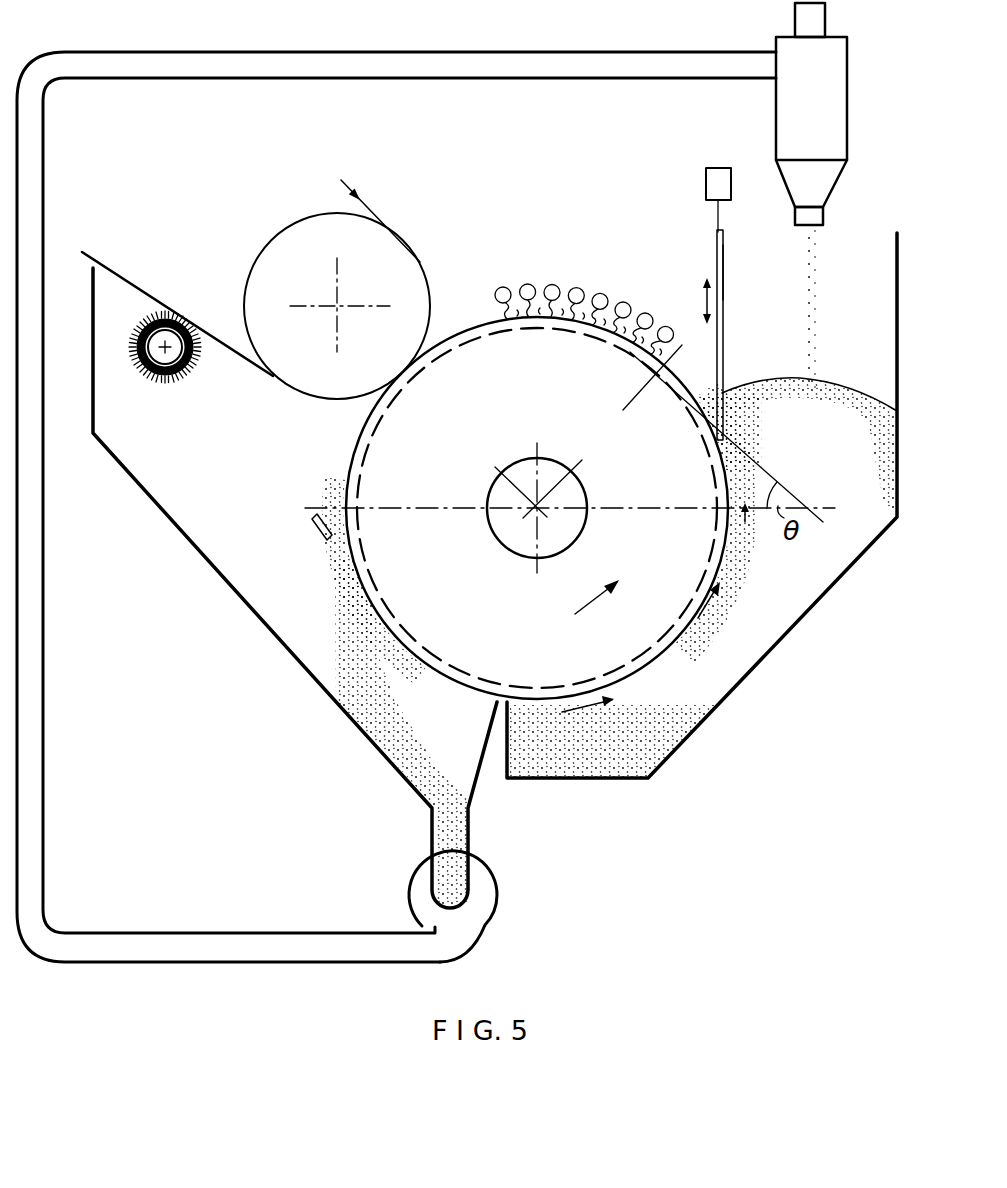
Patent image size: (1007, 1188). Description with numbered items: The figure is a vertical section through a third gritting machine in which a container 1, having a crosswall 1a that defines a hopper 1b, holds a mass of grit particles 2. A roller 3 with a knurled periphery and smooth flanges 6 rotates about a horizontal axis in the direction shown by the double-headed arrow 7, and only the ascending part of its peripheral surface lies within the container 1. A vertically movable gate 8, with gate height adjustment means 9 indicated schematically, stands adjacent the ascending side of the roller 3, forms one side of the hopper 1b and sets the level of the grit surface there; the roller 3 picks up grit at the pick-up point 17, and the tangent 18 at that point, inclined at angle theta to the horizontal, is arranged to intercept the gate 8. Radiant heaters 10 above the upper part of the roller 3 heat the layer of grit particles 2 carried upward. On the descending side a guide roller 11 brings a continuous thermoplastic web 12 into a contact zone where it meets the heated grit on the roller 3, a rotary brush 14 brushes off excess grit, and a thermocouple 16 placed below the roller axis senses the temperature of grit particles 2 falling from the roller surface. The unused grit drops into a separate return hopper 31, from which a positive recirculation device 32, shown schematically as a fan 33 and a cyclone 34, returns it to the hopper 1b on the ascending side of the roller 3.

The container 1 is at (783, 637).
The crosswall 1a is at (723, 275).
The hopper 1b is at (850, 318).
The grit particles 2 is at (860, 398).
The roller 3 is at (690, 573).
The flanges 6 is at (463, 333).
The double-headed arrow 7 is at (575, 614).
The gate 8 is at (723, 318).
The gate height adjustment means 9 is at (706, 187).
The radiant heaters 10 is at (585, 297).
The guide roller 11 is at (404, 267).
The thermoplastic web 12 is at (367, 205).
The rotary brush 14 is at (152, 380).
The thermocouple 16 is at (312, 531).
The pick-up point 17 is at (663, 371).
The tangent 18 is at (763, 472).
The return hopper 31 is at (241, 596).
The recirculation device 32 is at (224, 935).
The fan 33 is at (492, 908).
The cyclone 34 is at (776, 118).